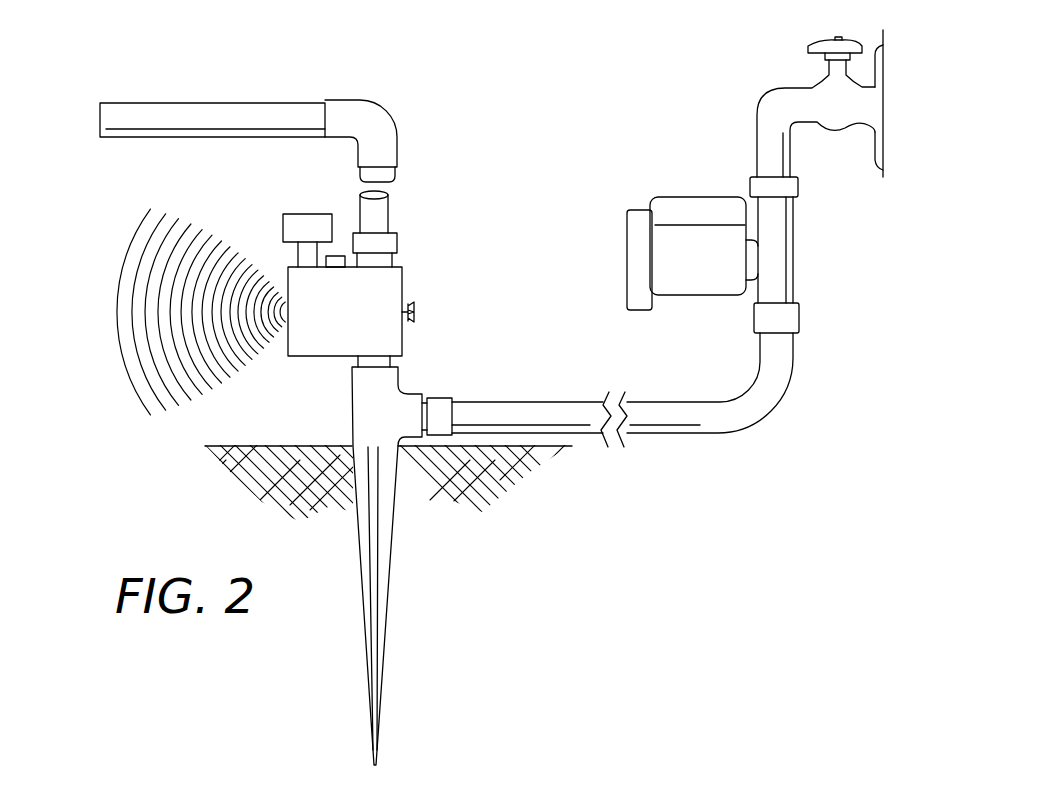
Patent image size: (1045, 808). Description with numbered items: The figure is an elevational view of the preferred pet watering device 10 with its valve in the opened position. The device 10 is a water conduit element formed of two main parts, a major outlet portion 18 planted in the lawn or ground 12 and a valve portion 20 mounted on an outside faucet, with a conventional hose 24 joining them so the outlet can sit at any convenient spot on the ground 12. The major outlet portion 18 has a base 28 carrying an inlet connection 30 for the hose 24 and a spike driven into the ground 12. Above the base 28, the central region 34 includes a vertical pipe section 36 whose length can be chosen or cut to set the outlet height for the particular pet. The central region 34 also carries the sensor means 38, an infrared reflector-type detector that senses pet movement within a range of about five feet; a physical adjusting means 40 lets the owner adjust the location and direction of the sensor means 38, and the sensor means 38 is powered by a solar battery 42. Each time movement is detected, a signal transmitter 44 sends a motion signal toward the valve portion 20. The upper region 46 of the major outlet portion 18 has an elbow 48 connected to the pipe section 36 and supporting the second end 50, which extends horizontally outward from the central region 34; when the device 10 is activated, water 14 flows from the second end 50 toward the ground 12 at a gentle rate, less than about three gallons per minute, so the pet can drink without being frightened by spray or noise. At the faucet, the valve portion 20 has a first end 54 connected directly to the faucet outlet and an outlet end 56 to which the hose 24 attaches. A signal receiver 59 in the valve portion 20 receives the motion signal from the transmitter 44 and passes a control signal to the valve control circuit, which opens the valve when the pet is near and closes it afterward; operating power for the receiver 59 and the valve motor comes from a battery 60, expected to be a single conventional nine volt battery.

The pet watering device 10 is at (547, 120).
The ground 12 is at (275, 445).
The water 14 is at (80, 133).
The major outlet portion 18 is at (435, 230).
The valve portion 20 is at (683, 160).
The hose 24 is at (677, 400).
The base 28 is at (416, 369).
The inlet connection 30 is at (413, 400).
The central region 34 is at (435, 278).
The pipe section 36 is at (395, 210).
The sensor means 38 is at (313, 343).
The physical adjusting means 40 is at (413, 308).
The solar battery 42 is at (338, 256).
The signal transmitter 44 is at (309, 213).
The upper region 46 is at (285, 92).
The elbow 48 is at (378, 102).
The second end 50 is at (190, 105).
The first end 54 is at (798, 185).
The outlet end 56 is at (800, 313).
The signal receiver 59 is at (633, 262).
The battery 60 is at (707, 205).